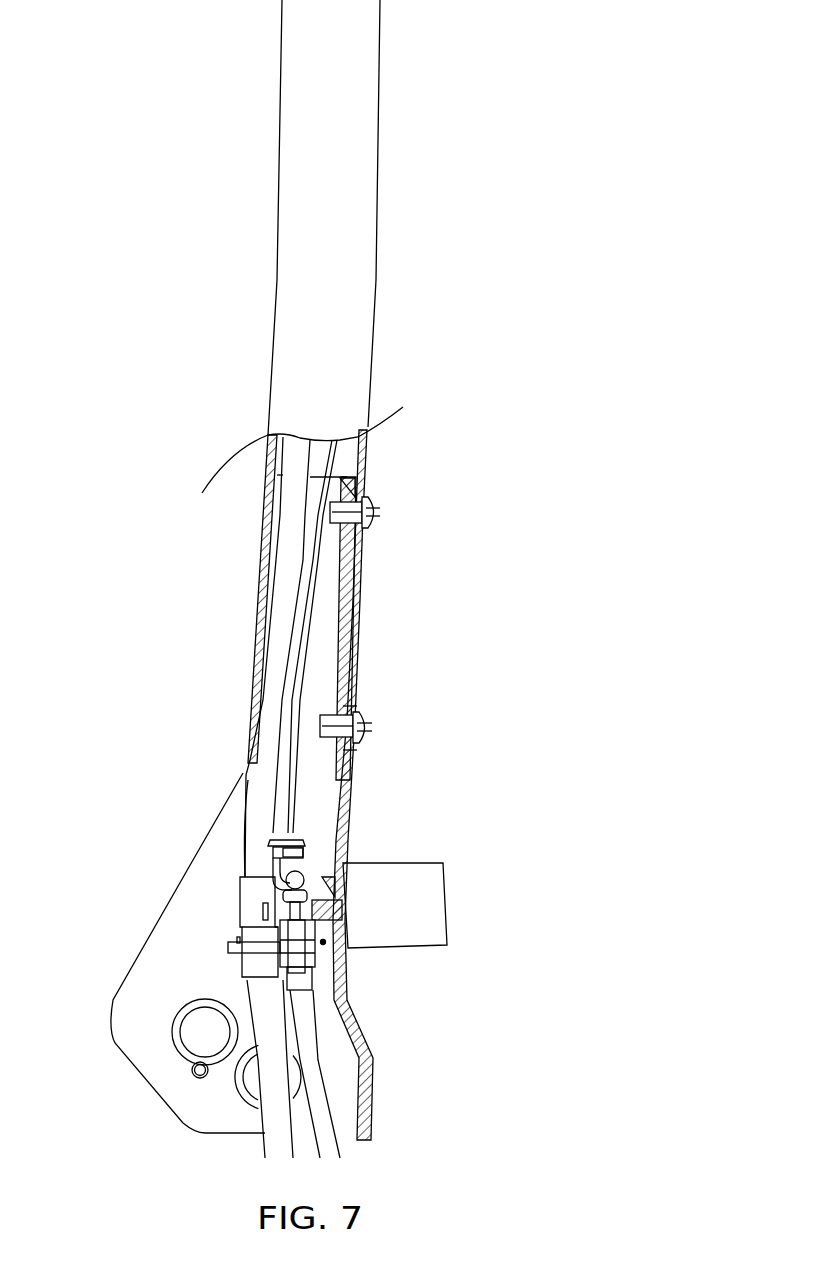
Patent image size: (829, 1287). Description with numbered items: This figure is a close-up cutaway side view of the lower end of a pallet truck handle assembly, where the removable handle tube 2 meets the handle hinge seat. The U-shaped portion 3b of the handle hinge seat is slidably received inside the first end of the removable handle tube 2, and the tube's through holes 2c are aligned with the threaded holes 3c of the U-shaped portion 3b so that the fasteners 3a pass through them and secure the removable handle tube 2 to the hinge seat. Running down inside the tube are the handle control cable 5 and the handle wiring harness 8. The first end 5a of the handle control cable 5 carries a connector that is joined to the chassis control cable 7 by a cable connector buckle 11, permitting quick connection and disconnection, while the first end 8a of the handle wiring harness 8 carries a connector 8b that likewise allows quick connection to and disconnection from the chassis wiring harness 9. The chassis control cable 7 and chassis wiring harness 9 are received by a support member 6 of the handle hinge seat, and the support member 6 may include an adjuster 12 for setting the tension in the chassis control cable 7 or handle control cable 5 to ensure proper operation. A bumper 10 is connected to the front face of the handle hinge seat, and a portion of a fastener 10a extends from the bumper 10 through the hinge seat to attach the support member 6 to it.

The removable handle tube 2 is at (379, 261).
The through holes 2c is at (347, 717).
The fasteners 3a is at (368, 500).
The U-shaped portion 3b is at (347, 565).
The threaded holes 3c is at (322, 738).
The handle control cable 5 is at (292, 807).
The first end of the handle control cable 5a is at (305, 850).
The support member 6 is at (333, 940).
The chassis control cable 7 is at (304, 1010).
The handle wiring harness 8 is at (278, 695).
The first end of the handle wiring harness 8a is at (242, 860).
The connector 8b is at (252, 912).
The chassis wiring harness 9 is at (272, 1071).
The bumper 10 is at (385, 882).
The portion of a fastener 10a is at (322, 910).
The cable connector buckle 11 is at (272, 853).
The adjuster 12 is at (317, 963).